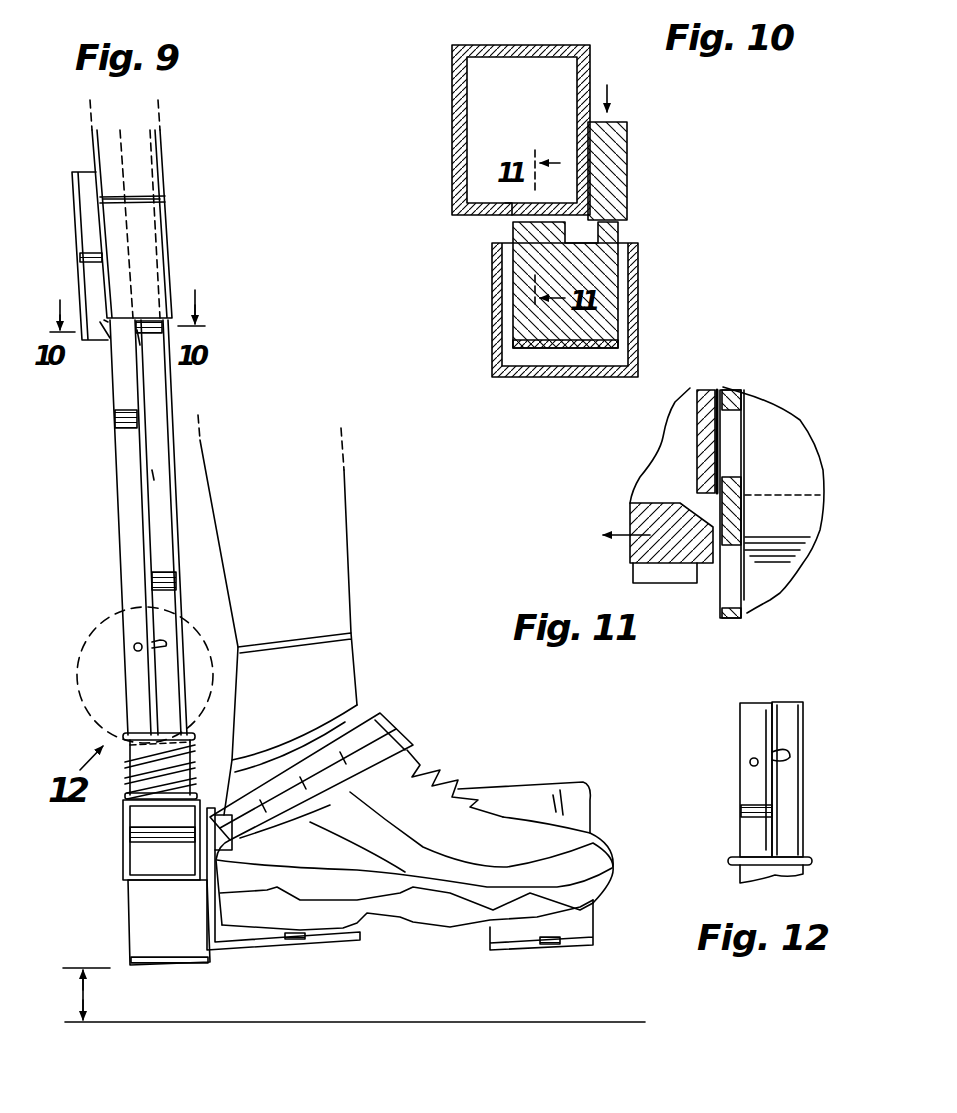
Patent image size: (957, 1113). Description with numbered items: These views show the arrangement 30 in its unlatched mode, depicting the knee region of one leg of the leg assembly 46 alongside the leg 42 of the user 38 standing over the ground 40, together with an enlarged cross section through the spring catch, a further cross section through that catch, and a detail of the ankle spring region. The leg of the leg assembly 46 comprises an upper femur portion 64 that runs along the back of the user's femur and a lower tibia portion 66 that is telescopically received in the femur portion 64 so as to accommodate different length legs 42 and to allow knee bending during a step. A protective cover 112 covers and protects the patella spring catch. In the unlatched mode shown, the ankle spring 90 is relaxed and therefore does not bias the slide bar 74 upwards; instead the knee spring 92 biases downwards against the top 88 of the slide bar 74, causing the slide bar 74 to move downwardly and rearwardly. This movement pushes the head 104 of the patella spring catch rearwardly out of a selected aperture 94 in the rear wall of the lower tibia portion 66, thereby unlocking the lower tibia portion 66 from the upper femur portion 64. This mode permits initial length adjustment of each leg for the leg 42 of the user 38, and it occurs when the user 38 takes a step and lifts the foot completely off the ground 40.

In FIG. 9, the arrangement 30 is at (95, 613).
In FIG. 9, the user 38 is at (348, 483).
In FIG. 9, the ground 40 is at (395, 1021).
In FIG. 9, the leg of the user 42 is at (332, 535).
In FIG. 9, the leg assembly 46 is at (155, 472).
In FIG. 9, the upper femur portion 64 is at (170, 160).
In FIG. 9, the lower tibia portion 66 is at (123, 585).
In FIG. 10, the lower tibia portion 66 is at (452, 78).
In FIG. 11, the lower tibia portion 66 is at (770, 585).
In FIG. 12, the lower tibia portion 66 is at (790, 785).
In FIG. 9, the slide bar 74 is at (123, 388).
In FIG. 10, the slide bar 74 is at (627, 165).
In FIG. 12, the slide bar 74 is at (750, 730).
In FIG. 9, the top of the slide bar 88 is at (105, 296).
In FIG. 9, the ankle spring 90 is at (122, 740).
In FIG. 12, the ankle spring 90 is at (812, 857).
In FIG. 9, the knee spring 92 is at (140, 258).
In FIG. 9, the aperture 94 is at (114, 389).
In FIG. 10, the aperture 94 is at (515, 212).
In FIG. 11, the aperture 94 is at (735, 447).
In FIG. 9, the head of the patella spring catch 104 is at (100, 337).
In FIG. 10, the head of the patella spring catch 104 is at (620, 232).
In FIG. 11, the head of the patella spring catch 104 is at (633, 515).
In FIG. 9, the protective cover 112 is at (78, 207).
In FIG. 10, the protective cover 112 is at (640, 292).
In FIG. 11, the protective cover 112 is at (673, 442).